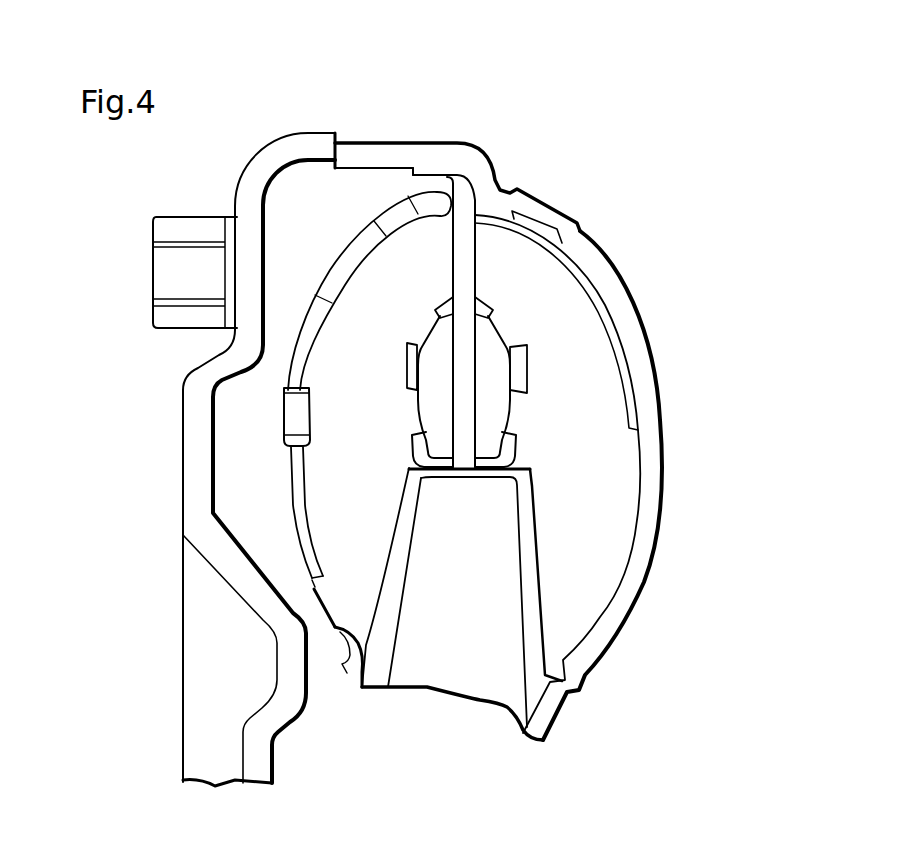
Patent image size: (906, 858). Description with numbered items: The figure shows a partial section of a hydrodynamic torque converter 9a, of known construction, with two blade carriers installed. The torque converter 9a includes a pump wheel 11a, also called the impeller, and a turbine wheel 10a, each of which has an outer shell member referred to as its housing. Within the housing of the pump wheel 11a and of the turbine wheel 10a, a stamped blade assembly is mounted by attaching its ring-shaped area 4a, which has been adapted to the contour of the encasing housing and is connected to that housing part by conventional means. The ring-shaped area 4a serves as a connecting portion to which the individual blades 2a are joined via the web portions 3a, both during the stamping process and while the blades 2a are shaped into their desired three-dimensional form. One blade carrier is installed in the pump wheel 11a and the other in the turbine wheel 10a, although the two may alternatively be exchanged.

The blades 2a is at (377, 474).
The web portions 3a is at (585, 277).
The ring-shaped area 4a is at (432, 168).
The torque converter 9a is at (538, 167).
The turbine wheel 10a is at (303, 363).
The pump wheel 11a is at (650, 470).